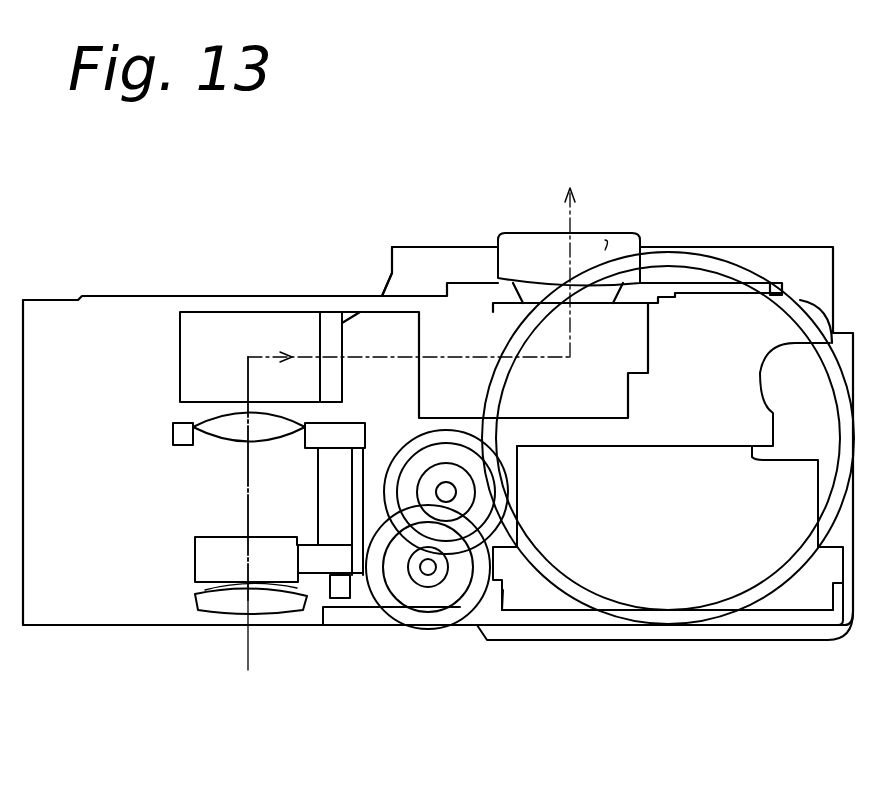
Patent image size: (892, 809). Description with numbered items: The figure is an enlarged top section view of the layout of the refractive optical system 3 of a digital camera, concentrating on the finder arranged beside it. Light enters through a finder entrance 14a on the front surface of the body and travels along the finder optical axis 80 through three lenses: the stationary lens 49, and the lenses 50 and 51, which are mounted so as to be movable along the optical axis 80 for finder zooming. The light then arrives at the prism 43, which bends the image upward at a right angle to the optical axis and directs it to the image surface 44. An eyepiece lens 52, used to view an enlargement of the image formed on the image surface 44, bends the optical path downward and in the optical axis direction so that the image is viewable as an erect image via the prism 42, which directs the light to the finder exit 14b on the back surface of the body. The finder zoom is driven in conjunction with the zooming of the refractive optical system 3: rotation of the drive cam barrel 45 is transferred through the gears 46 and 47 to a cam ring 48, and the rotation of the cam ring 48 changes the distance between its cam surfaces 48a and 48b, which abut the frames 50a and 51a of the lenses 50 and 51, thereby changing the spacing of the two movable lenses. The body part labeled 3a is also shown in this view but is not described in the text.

The refractive optical system 3 is at (768, 510).
The bottom cover of camera body 3a is at (680, 640).
The finder entrance 14a is at (262, 635).
The finder exit 14b is at (607, 242).
The prism 42 is at (437, 327).
The prism 43 is at (227, 333).
The image surface 44 is at (333, 375).
The drive cam barrel 45 is at (562, 600).
The gear 46 is at (458, 490).
The gear 47 is at (415, 627).
The cam ring 48 is at (340, 598).
The cam surface 48a is at (322, 577).
The cam surface 48b is at (330, 450).
The lens 49 is at (217, 603).
The lens 50 is at (280, 563).
The frame 50a is at (428, 580).
The lens 51 is at (213, 423).
The frame 51a is at (352, 432).
The eyepiece lens 52 is at (543, 253).
The optical axis 80 is at (246, 500).